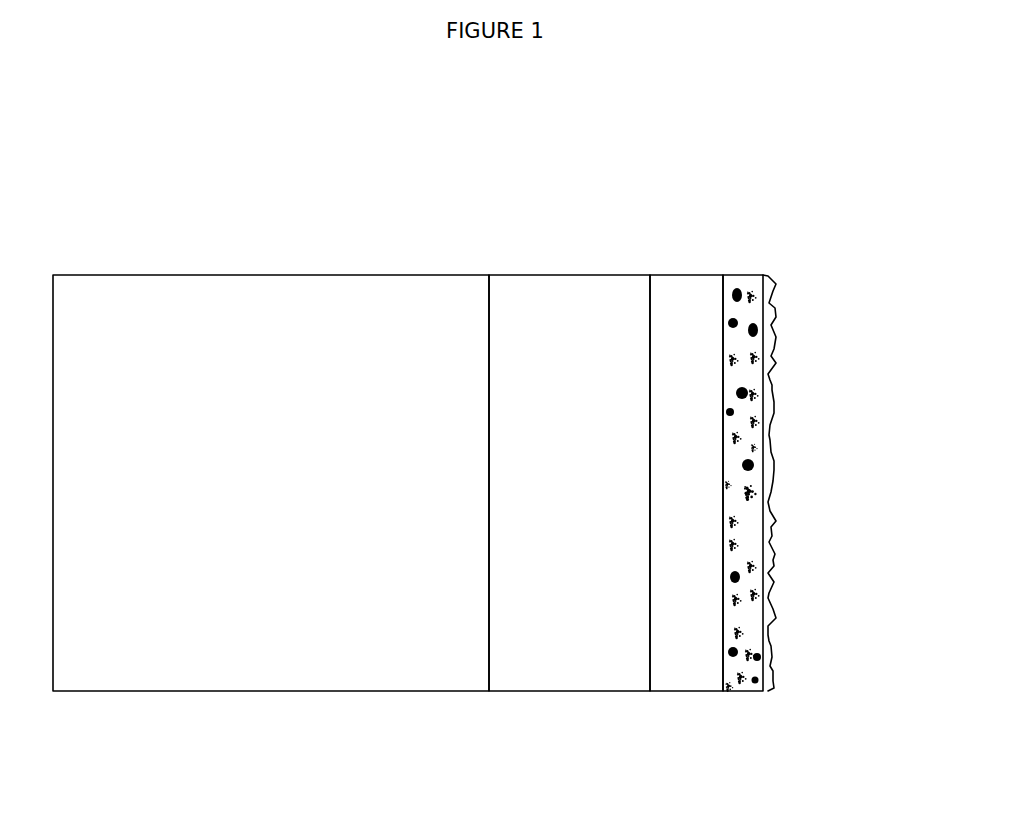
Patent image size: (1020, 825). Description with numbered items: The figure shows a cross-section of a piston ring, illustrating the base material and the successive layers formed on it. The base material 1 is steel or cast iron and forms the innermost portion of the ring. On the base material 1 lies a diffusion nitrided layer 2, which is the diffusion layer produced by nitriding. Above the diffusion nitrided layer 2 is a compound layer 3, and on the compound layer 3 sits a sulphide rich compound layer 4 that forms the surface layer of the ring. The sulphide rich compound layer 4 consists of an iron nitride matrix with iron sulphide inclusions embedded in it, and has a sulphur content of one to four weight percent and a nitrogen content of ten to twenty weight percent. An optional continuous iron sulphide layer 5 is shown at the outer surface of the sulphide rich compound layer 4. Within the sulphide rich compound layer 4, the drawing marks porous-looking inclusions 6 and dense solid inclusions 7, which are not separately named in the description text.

The base material 1 is at (223, 636).
The diffusion nitrided layer 2 is at (542, 644).
The compound layer 3 is at (693, 636).
The sulphide rich compound layer 4 is at (743, 281).
The continuous iron sulphide layer 5 is at (777, 463).
The porous particles 6 is at (801, 491).
The solid particles 7 is at (809, 486).